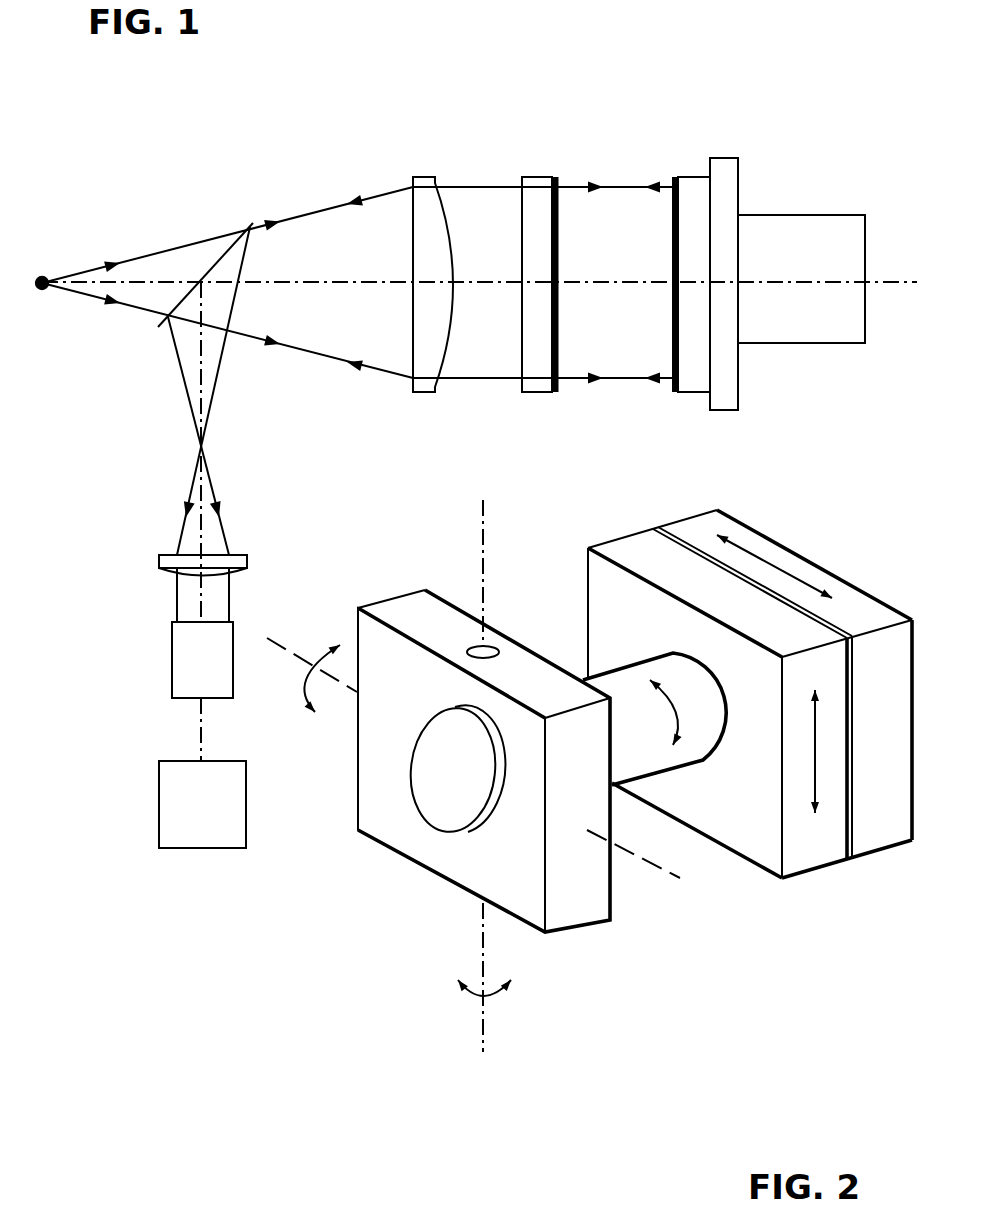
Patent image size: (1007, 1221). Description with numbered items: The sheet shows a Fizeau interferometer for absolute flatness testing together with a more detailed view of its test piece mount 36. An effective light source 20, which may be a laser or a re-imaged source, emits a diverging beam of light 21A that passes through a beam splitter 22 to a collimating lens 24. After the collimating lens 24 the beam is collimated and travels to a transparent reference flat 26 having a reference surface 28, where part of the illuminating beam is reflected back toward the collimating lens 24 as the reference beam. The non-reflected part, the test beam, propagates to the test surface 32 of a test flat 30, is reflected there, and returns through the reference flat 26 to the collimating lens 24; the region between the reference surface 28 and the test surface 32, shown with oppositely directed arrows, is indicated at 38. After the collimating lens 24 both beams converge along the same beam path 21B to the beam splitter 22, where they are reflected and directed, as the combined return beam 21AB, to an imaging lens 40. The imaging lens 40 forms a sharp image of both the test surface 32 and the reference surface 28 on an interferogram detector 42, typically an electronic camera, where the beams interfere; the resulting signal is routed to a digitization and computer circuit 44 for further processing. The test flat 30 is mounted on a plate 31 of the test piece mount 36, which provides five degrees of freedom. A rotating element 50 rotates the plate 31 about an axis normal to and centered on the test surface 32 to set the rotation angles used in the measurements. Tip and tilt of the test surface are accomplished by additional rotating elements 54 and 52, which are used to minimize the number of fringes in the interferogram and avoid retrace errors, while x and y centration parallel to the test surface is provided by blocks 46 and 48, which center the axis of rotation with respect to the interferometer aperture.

In FIG. 1, the effective light source 20 is at (45, 277).
In FIG. 1, the diverging beam of light 21A is at (143, 256).
In FIG. 1, the beam path 21B is at (373, 196).
In FIG. 1, the return beam 21AB is at (218, 372).
In FIG. 1, the beam splitter 22 is at (228, 250).
In FIG. 1, the collimating lens 24 is at (428, 205).
In FIG. 1, the transparent reference flat 26 is at (537, 195).
In FIG. 1, the reference surface 28 is at (562, 216).
In FIG. 1, the test flat 30 is at (693, 177).
In FIG. 2, the test flat 30 is at (445, 712).
In FIG. 1, the plate 31 is at (728, 410).
In FIG. 2, the plate 31 is at (532, 673).
In FIG. 1, the test surface 32 is at (672, 345).
In FIG. 2, the test surface 32 is at (447, 807).
In FIG. 1, the test piece mount 36 is at (805, 215).
In FIG. 2, the test piece mount 36 is at (806, 534).
In FIG. 1, the measurement cavity 38 is at (602, 276).
In FIG. 1, the imaging lens 40 is at (245, 562).
In FIG. 1, the interferogram detector 42 is at (233, 642).
In FIG. 1, the digitization and computer circuit 44 is at (162, 802).
In FIG. 2, the centration block 46 is at (688, 528).
In FIG. 2, the centration block 48 is at (807, 858).
In FIG. 2, the rotating element 50 is at (640, 763).
In FIG. 2, the tilt rotating element 52 is at (483, 1035).
In FIG. 2, the tip rotating element 54 is at (345, 693).